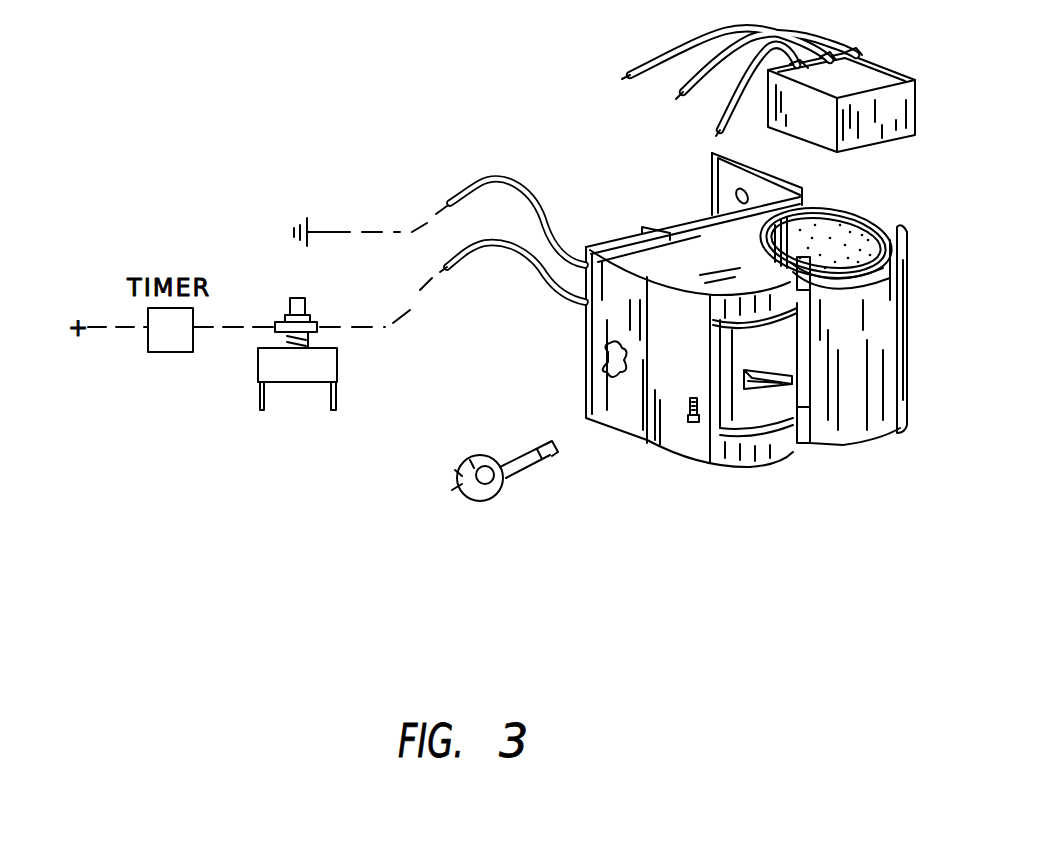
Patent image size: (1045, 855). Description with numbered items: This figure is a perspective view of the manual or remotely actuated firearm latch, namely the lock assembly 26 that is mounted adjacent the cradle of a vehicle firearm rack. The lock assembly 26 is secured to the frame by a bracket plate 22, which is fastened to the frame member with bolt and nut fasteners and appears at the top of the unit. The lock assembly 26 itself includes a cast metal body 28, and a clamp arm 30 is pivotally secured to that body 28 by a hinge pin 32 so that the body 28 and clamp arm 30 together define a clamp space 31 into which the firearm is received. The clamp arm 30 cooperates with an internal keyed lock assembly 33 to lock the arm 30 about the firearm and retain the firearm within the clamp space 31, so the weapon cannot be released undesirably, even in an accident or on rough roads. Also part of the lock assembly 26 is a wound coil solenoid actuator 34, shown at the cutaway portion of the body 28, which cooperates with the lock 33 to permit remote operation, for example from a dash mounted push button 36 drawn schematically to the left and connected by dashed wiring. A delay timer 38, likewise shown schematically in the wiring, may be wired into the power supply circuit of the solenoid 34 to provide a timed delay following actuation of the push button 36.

The bracket plate 22 is at (710, 168).
The lock assembly 26 is at (622, 236).
The cast metal body 28 is at (598, 330).
The clamp arm 30 is at (838, 452).
The clamp space 31 is at (828, 234).
The hinge pin 32 is at (738, 424).
The internal keyed lock assembly 33 is at (690, 420).
The solenoid actuator 34 is at (608, 366).
The push button 36 is at (287, 385).
The delay timer 38 is at (162, 352).